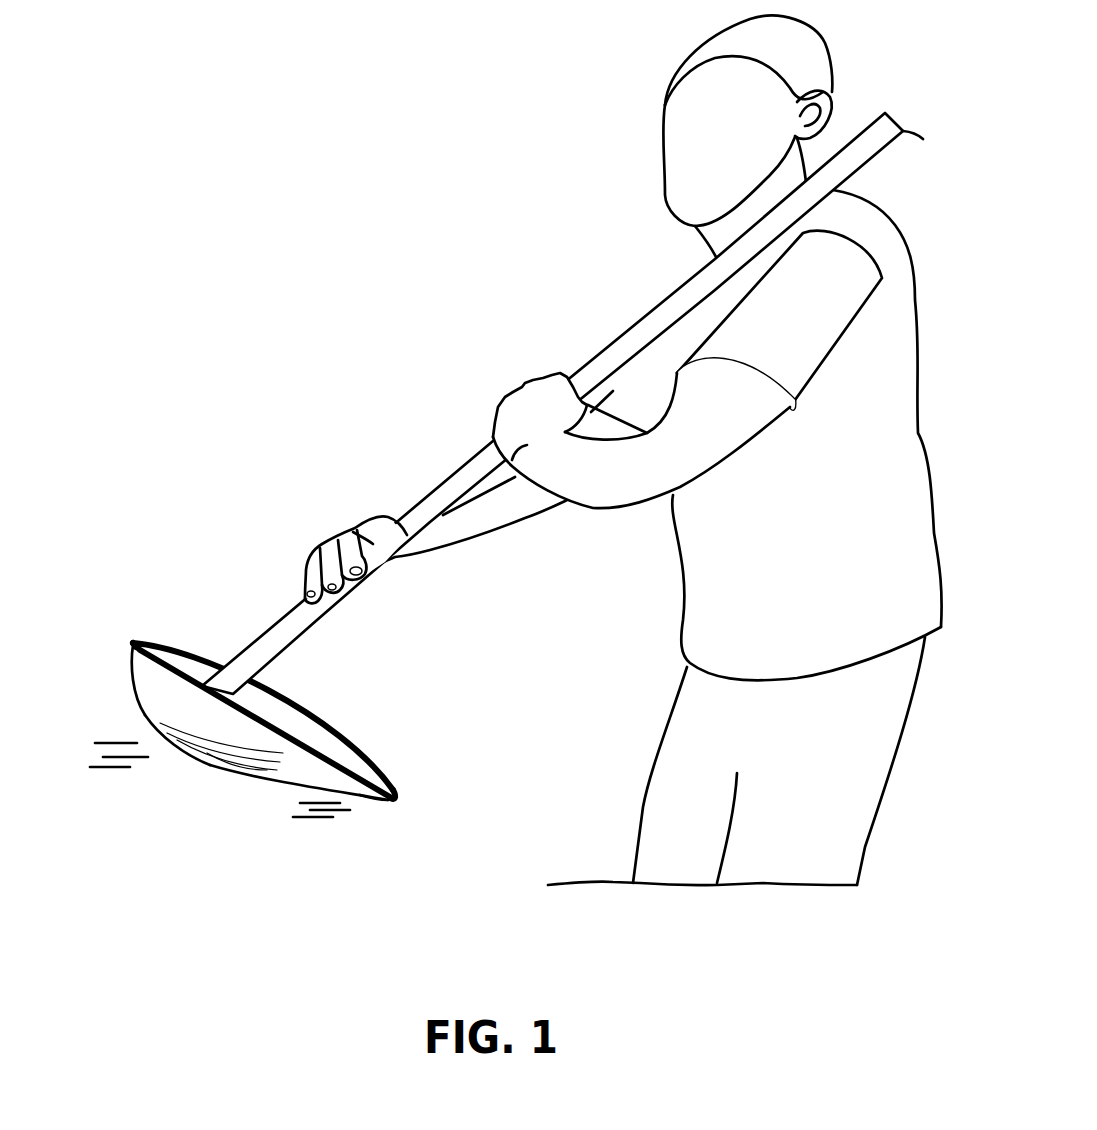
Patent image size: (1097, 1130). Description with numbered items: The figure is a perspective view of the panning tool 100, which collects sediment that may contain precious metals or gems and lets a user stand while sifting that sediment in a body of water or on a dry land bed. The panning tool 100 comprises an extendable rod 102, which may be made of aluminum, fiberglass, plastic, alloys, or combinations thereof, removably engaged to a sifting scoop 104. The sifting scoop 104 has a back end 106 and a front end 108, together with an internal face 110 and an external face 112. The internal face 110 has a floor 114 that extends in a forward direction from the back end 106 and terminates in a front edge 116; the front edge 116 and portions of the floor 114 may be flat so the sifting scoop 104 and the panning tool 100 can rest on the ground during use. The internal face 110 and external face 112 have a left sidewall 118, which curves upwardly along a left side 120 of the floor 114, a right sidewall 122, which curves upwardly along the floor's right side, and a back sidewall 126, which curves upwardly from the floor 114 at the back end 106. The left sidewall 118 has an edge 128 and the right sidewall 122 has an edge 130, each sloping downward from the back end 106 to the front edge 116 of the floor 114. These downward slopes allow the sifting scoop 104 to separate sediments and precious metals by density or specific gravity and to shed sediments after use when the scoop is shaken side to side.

The panning tool 100 is at (491, 511).
The extendable rod 102 is at (443, 484).
The sifting scoop 104 is at (267, 768).
The back end 106 is at (158, 733).
The front end 108 is at (378, 800).
The internal face 110 is at (350, 747).
The external face 112 is at (170, 705).
The floor 114 is at (232, 768).
The front edge 116 is at (393, 790).
The left sidewall 118 is at (200, 745).
The left side 120 is at (173, 745).
The right sidewall 122 is at (190, 663).
The back sidewall 126 is at (137, 678).
The edge 128 is at (335, 778).
The edge 130 is at (316, 697).